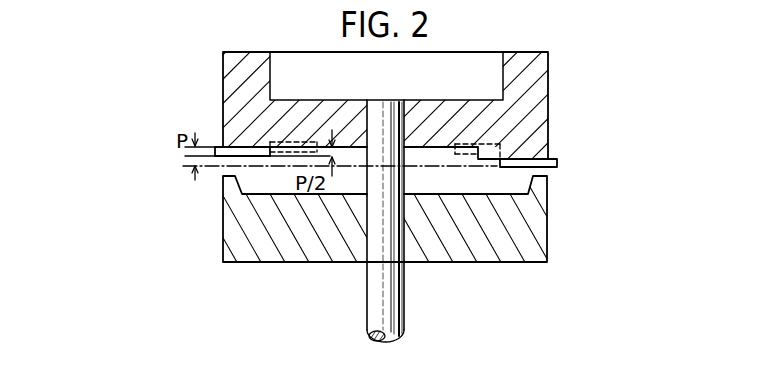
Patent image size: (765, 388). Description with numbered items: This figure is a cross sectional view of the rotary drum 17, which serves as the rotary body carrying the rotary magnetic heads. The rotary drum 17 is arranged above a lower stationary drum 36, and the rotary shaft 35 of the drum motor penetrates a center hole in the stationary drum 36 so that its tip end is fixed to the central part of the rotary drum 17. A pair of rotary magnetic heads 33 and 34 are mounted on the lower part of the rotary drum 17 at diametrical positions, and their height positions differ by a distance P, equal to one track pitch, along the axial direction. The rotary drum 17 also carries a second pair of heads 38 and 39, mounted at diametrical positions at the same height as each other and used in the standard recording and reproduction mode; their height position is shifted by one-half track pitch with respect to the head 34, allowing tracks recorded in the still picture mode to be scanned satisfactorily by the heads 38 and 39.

The rotary drum 17 is at (550, 78).
The rotary magnetic head 33 is at (557, 157).
The rotary magnetic head 34 is at (214, 146).
The rotary shaft 35 is at (405, 289).
The lower stationary drum 36 is at (550, 220).
The rotary magnetic head 38 is at (468, 142).
The rotary magnetic head 39 is at (290, 141).